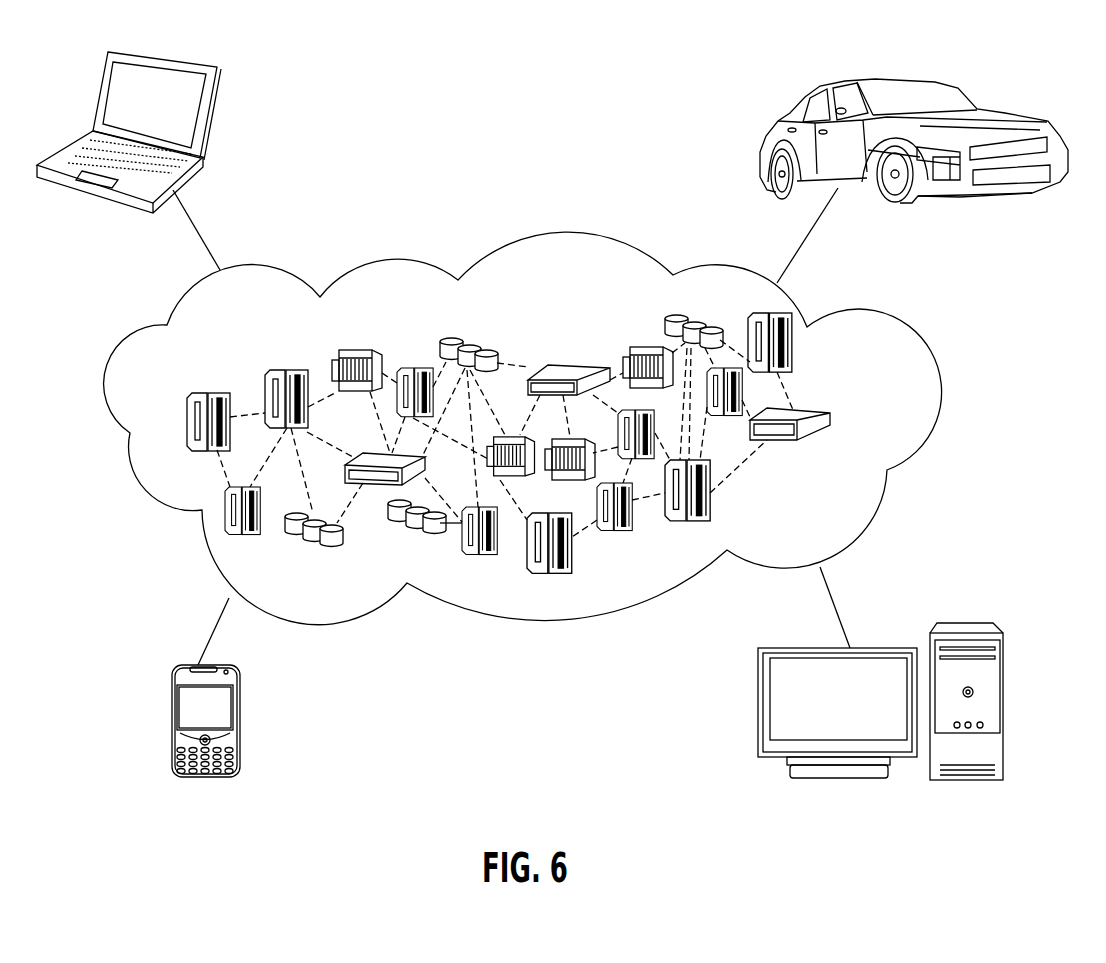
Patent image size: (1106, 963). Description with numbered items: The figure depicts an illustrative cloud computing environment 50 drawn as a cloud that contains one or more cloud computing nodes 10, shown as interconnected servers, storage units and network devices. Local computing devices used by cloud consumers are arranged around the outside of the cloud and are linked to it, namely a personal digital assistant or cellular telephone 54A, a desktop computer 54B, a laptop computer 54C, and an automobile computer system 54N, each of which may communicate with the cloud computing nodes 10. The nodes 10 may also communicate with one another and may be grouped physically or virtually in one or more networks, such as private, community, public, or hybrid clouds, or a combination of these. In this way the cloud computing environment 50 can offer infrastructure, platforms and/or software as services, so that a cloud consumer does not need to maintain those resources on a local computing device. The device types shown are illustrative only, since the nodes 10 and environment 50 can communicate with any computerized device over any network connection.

The cloud computing node 10 is at (866, 418).
The cloud computing environment 50 is at (897, 337).
The personal digital assistant or cellular telephone 54A is at (170, 723).
The desktop computer 54B is at (968, 623).
The laptop computer 54C is at (207, 118).
The automobile computer system 54N is at (767, 125).